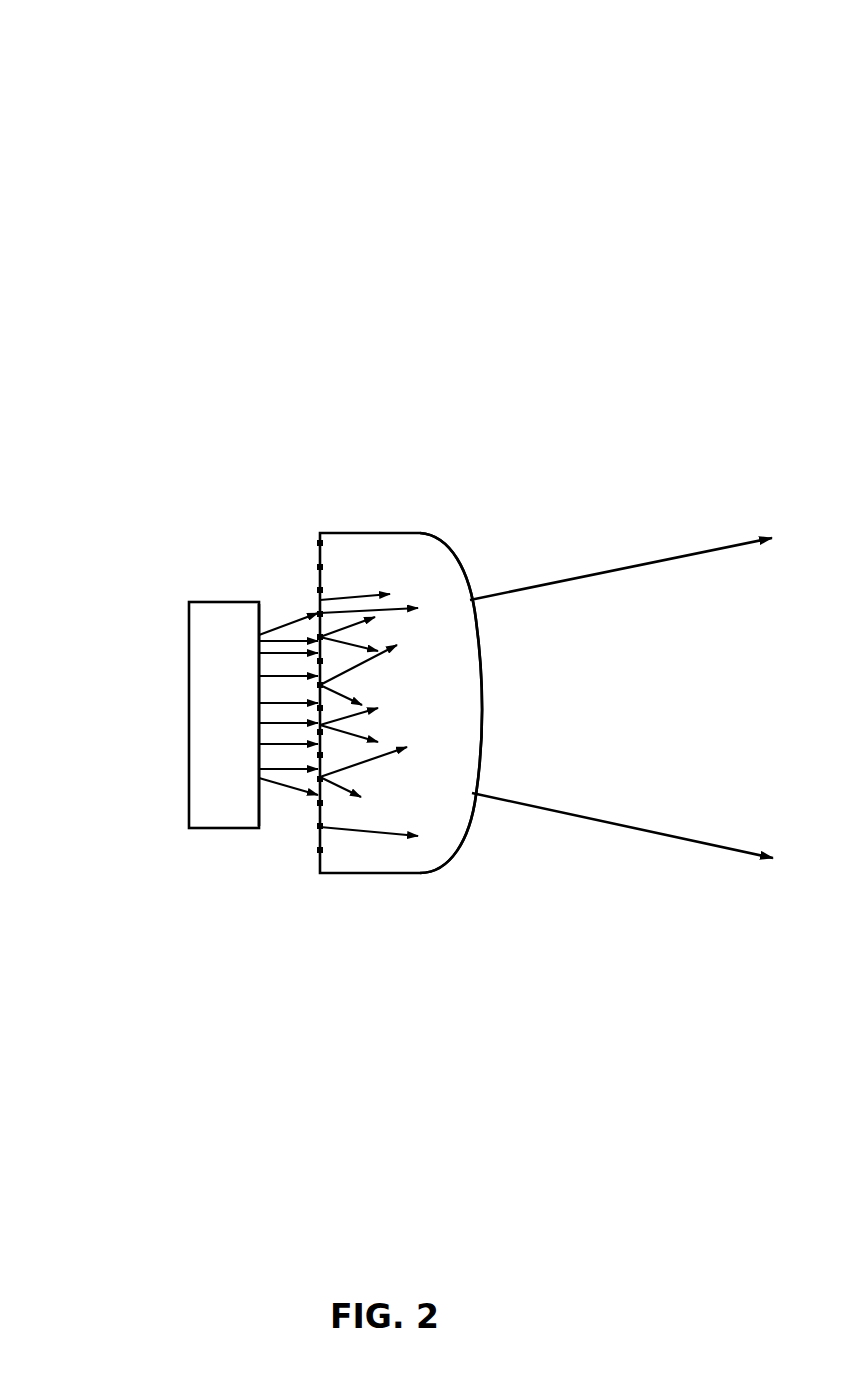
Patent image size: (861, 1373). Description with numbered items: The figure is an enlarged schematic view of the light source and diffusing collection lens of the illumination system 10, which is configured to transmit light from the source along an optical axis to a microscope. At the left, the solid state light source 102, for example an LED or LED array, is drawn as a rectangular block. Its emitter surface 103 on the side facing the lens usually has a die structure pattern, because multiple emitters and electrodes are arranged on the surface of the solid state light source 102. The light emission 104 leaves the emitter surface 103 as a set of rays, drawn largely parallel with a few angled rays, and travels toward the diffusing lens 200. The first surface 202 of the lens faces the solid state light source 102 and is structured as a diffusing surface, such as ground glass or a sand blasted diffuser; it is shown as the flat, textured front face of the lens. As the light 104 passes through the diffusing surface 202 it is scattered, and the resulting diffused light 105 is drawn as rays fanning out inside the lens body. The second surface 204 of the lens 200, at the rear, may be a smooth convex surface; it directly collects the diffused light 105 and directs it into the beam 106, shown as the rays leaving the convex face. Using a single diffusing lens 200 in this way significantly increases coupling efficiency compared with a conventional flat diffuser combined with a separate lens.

The illumination system 10 is at (153, 128).
The solid state light source 102 is at (223, 810).
The emitter surface 103 is at (260, 613).
The light emission 104 is at (277, 702).
The diffused light 105 is at (345, 632).
The beam 106 is at (728, 852).
The diffusing lens 200 is at (445, 828).
The first surface 202 is at (318, 852).
The second surface 204 is at (482, 675).